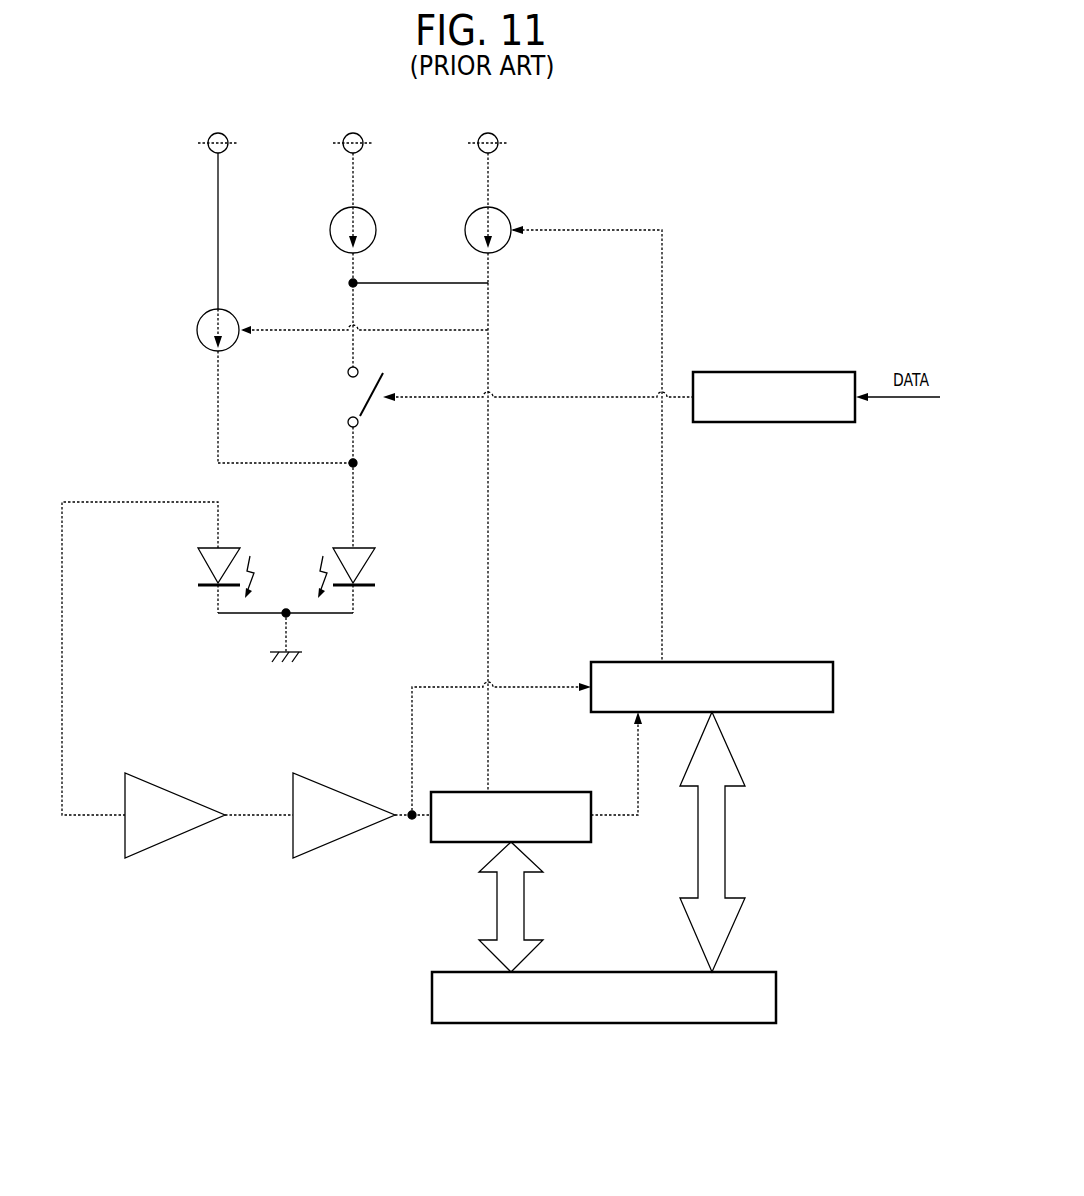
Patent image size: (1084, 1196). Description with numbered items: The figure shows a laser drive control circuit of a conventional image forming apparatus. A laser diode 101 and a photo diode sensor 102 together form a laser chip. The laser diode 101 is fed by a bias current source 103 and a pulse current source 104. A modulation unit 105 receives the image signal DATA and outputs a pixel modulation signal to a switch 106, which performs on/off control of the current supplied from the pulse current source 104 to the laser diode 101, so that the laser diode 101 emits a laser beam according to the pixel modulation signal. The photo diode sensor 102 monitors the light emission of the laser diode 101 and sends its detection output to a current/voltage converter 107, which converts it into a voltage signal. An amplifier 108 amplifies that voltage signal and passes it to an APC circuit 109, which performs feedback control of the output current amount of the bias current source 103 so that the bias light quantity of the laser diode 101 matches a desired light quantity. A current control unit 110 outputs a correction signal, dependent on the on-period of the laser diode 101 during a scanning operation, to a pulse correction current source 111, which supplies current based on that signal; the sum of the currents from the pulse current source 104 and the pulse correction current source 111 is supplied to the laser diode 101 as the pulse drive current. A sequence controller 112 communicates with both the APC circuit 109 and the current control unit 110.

The laser diode 101 is at (372, 568).
The photo diode sensor 102 is at (196, 570).
The bias current source 103 is at (198, 322).
The pulse current source 104 is at (333, 210).
The modulation unit 105 is at (814, 372).
The switch 106 is at (358, 397).
The current/voltage converter 107 is at (150, 852).
The amplifier 108 is at (318, 853).
The APC circuit 109 is at (450, 843).
The current control unit 110 is at (777, 662).
The pulse correction current source 111 is at (503, 214).
The sequence controller 112 is at (777, 997).